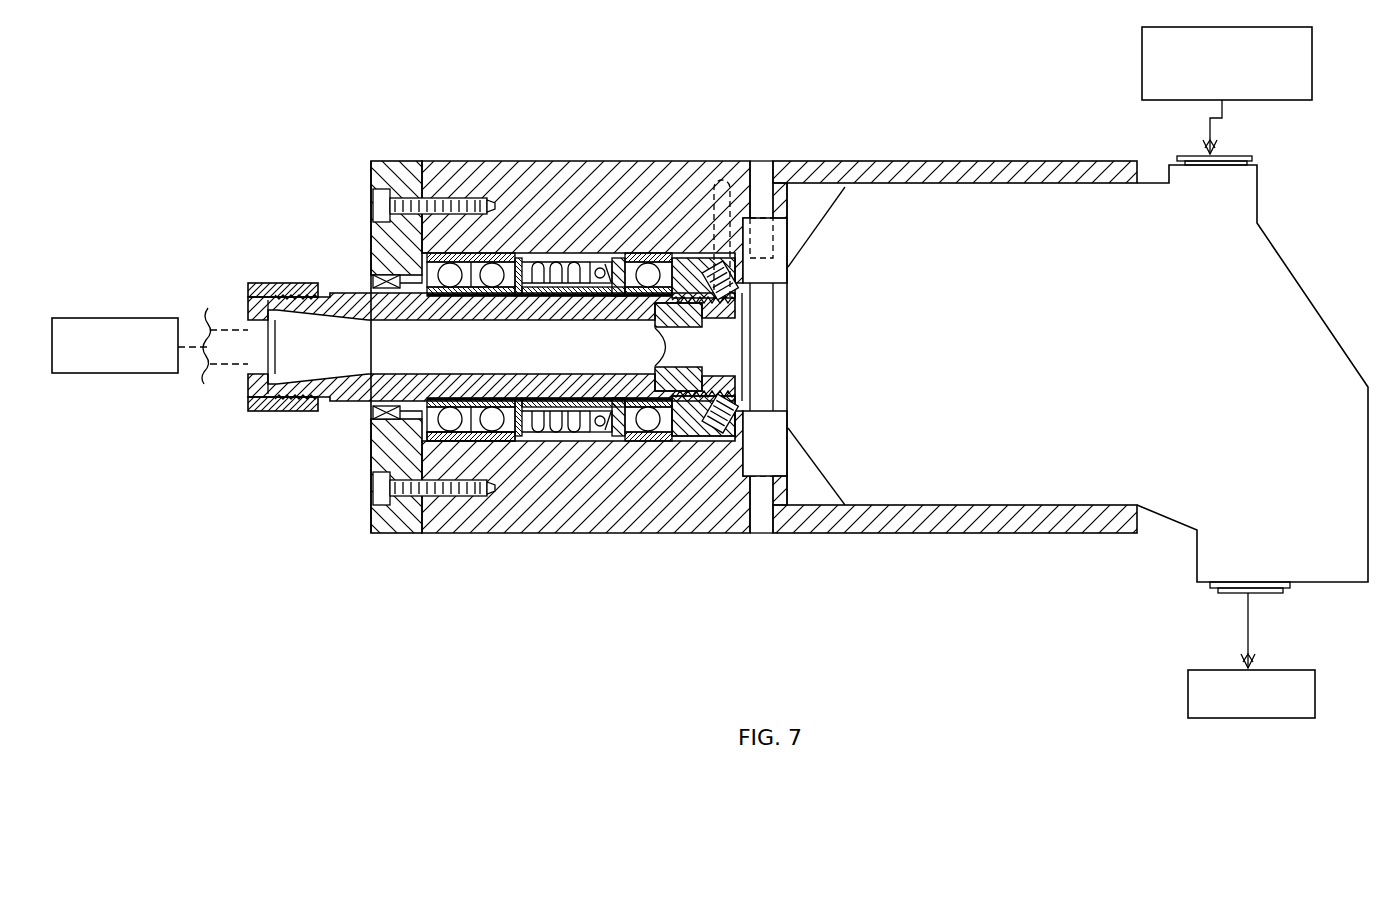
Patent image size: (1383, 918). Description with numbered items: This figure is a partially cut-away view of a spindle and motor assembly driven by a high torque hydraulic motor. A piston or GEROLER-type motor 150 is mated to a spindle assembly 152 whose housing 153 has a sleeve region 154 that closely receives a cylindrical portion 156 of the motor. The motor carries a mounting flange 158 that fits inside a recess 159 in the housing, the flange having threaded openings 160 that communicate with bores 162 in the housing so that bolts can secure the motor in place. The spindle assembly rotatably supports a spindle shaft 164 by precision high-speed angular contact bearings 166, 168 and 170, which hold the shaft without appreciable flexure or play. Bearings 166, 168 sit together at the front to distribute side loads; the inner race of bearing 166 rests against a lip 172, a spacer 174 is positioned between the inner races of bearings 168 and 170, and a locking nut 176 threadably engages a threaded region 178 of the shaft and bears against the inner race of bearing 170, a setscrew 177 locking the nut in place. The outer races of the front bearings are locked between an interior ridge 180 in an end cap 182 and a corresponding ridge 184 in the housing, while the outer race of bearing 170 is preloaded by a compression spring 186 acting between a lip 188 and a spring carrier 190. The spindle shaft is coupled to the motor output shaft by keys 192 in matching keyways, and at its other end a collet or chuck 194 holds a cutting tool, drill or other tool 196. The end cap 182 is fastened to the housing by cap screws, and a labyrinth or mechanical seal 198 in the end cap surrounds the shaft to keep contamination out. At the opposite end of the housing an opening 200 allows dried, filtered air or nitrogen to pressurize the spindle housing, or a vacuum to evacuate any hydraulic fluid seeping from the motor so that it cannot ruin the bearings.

The piston or GEROLER-type motor 150 is at (982, 347).
The spindle assembly 152 is at (533, 576).
The housing 153 is at (652, 161).
The sleeve region 154 is at (1005, 161).
The cylindrical portion 156 is at (925, 505).
The mounting flange 158 is at (788, 267).
The recess 159 is at (788, 438).
The threaded openings 160 is at (775, 240).
The bores 162 is at (762, 165).
The spindle shaft 164 is at (524, 352).
The bearing 166 is at (490, 440).
The bearing 168 is at (490, 450).
The bearing 170 is at (650, 441).
The lip 172 is at (378, 256).
The spacer 174 is at (525, 262).
The locking nut 176 is at (724, 441).
The setscrew 177 is at (740, 283).
The threaded region 178 is at (700, 441).
The interior ridge 180 is at (427, 437).
The end cap 182 is at (410, 161).
The ridge 184 is at (522, 440).
The compression spring 186 is at (558, 262).
The lip 188 is at (545, 440).
The spring carrier / output shaft 190 is at (735, 357).
The keys 192 is at (657, 347).
The collet or chuck 194 is at (280, 283).
The tool / cap screws 196 is at (378, 200).
The seal / threaded openings 198 is at (372, 278).
The opening 200 is at (721, 178).